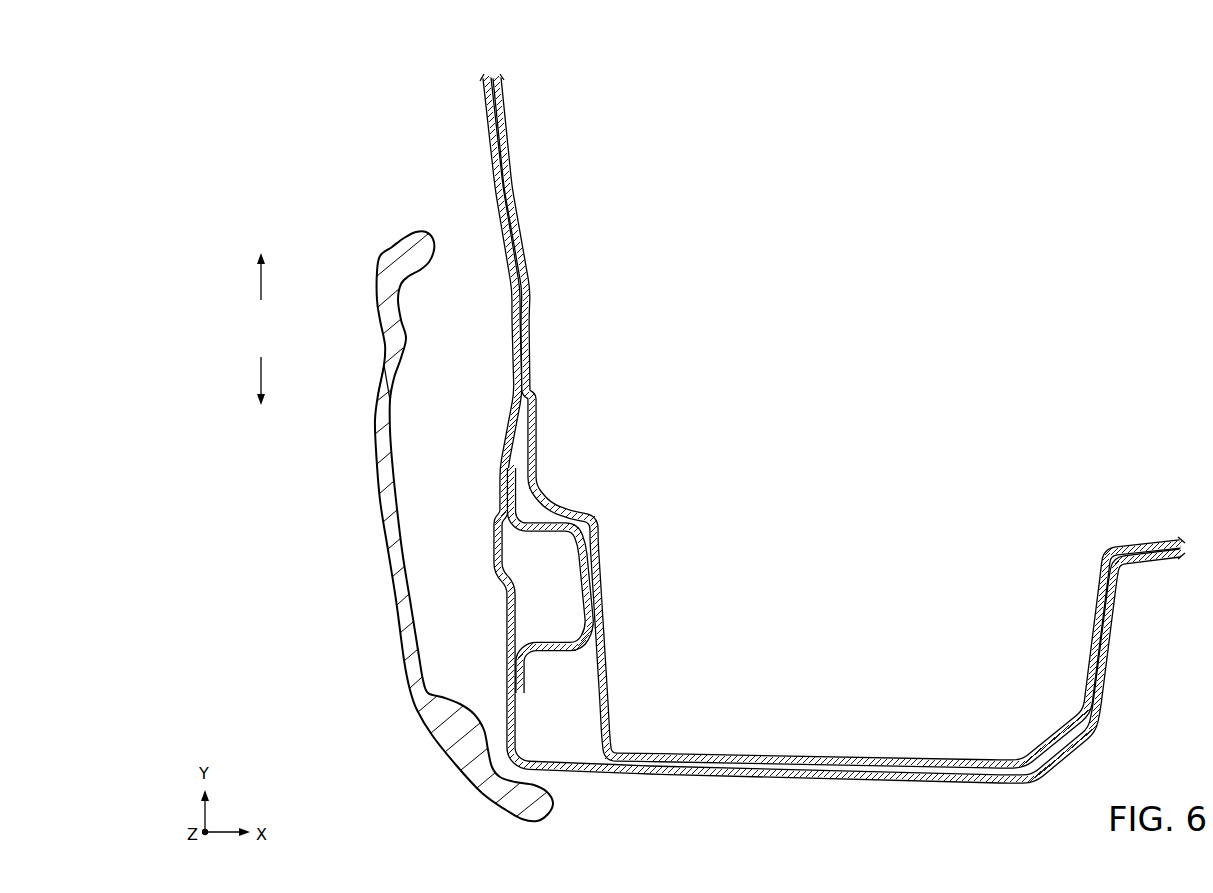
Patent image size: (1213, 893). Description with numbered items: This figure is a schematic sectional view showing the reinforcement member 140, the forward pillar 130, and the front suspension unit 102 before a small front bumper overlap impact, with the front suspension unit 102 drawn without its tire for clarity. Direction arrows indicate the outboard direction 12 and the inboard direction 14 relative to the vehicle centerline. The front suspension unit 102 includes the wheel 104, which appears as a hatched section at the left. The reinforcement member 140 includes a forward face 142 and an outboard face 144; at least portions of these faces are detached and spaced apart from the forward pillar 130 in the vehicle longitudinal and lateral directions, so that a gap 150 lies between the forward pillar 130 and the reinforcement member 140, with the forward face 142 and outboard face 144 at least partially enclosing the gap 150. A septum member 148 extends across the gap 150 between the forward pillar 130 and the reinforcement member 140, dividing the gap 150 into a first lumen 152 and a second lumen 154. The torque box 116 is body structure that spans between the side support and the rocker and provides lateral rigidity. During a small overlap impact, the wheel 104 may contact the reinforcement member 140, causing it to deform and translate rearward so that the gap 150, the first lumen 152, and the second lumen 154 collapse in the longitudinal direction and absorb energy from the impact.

The direction 12 is at (262, 372).
The direction 14 is at (262, 280).
The front suspension unit 102 is at (450, 777).
The wheel 104 is at (413, 707).
The torque box 116 is at (540, 197).
The forward pillar 130 is at (816, 750).
The reinforcement member 140 is at (629, 782).
The forward face 142 is at (503, 253).
The outboard face 144 is at (813, 781).
The septum member 148 is at (550, 649).
The gap 150 is at (572, 604).
The first lumen 152 is at (559, 554).
The second lumen 154 is at (570, 748).